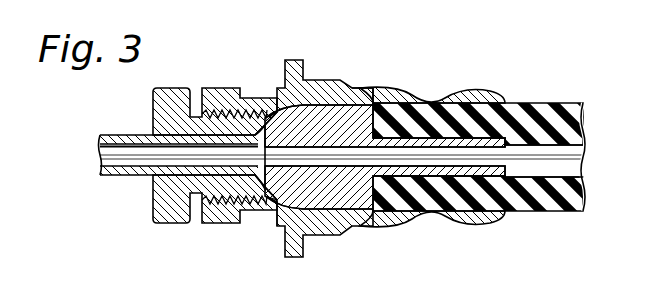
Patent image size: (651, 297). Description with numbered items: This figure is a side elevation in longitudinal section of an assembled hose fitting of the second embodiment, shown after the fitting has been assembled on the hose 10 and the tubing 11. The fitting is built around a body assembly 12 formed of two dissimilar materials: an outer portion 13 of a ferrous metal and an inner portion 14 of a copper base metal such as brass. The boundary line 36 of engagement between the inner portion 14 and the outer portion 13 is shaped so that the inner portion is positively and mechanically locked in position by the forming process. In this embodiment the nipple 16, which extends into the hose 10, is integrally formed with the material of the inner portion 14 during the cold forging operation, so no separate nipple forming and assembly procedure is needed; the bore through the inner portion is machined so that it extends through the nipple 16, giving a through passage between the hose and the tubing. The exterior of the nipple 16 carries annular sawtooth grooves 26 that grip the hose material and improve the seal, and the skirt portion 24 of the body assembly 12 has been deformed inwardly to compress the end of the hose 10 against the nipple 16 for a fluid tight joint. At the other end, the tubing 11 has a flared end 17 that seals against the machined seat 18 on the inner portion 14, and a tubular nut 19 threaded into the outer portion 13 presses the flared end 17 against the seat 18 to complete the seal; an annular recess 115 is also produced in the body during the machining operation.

The hose 10 is at (542, 215).
The tubing 11 is at (115, 176).
The body assembly 12 is at (345, 237).
The outer portion 13 is at (322, 87).
The inner portion 14 is at (373, 87).
The nipple 16 is at (490, 177).
The flared end 17 is at (287, 172).
The seat 18 is at (268, 196).
The tubular nut 19 is at (153, 102).
The skirt portion 24 is at (442, 98).
The annular sawtooth grooves 26 is at (436, 205).
The boundary line 36 is at (300, 222).
The annular recess 115 is at (254, 97).